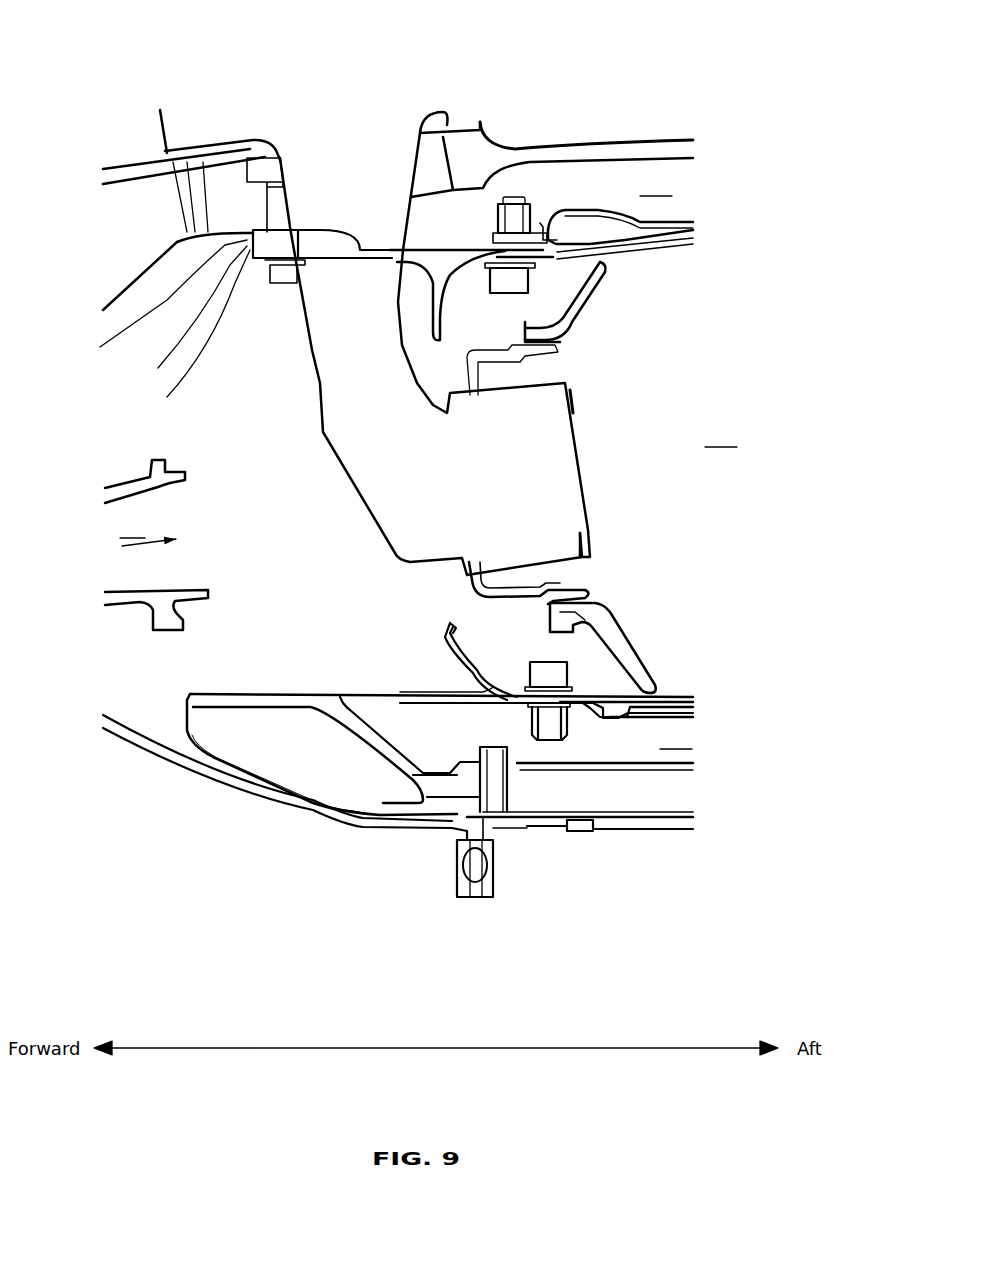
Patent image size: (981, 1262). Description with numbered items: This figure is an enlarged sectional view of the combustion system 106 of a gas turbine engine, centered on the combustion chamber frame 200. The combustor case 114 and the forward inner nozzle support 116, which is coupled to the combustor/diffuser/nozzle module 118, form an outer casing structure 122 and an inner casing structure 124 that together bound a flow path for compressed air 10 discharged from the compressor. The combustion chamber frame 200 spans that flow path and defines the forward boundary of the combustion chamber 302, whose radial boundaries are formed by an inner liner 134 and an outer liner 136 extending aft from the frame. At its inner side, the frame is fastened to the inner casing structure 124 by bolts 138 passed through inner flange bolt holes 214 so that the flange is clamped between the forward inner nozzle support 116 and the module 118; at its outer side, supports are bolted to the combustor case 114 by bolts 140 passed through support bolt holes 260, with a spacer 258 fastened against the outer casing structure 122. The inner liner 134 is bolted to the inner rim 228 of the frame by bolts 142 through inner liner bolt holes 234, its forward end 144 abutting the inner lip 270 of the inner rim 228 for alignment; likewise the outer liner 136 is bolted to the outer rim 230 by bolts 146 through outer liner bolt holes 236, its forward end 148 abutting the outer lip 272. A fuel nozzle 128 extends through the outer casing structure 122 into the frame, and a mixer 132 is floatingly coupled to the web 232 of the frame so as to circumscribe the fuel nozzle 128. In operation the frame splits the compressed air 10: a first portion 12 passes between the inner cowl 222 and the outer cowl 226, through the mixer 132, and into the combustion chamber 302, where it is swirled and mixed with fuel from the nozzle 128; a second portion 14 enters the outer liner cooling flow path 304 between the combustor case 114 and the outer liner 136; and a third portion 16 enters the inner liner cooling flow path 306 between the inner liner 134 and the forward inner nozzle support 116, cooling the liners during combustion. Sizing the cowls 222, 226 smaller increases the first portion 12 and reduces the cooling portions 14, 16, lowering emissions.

The compressed air 10 is at (148, 531).
The first portion of compressed air 12 is at (426, 399).
The second portion of compressed air 14 is at (412, 291).
The third portion of compressed air 16 is at (449, 676).
The combustion system 106 is at (155, 44).
The combustor case 114 is at (578, 152).
The forward inner nozzle support 116 is at (493, 827).
The combustor/diffuser/nozzle module 118 is at (403, 823).
The outer casing structure 122 is at (545, 108).
The inner casing structure 124 is at (619, 864).
The fuel nozzle 128 is at (565, 475).
The mixer 132 is at (500, 371).
The inner liner 134 is at (687, 697).
The outer liner 136 is at (683, 246).
The bolts 138 is at (493, 857).
The bolts 140 is at (160, 365).
The bolts 142 is at (545, 670).
The forward end of inner liner 144 is at (523, 707).
The bolts 146 is at (513, 283).
The forward end of outer liner 148 is at (480, 237).
The combustion chamber frame 200 is at (290, 681).
The inner flange bolt holes 214 is at (455, 840).
The inner cowl 222 is at (443, 623).
The outer cowl 226 is at (430, 364).
The inner rim 228 is at (580, 693).
The outer rim 230 is at (567, 272).
The web 232 is at (523, 329).
The inner liner bolt holes 234 is at (563, 697).
The outer liner bolt holes 236 is at (490, 253).
The spacer 258 is at (135, 333).
The support bolt holes 260 is at (203, 387).
The inner lip 270 is at (517, 703).
The outer lip 272 is at (490, 260).
The combustion chamber 302 is at (722, 436).
The outer liner cooling flow path 304 is at (657, 185).
The inner liner cooling flow path 306 is at (677, 738).